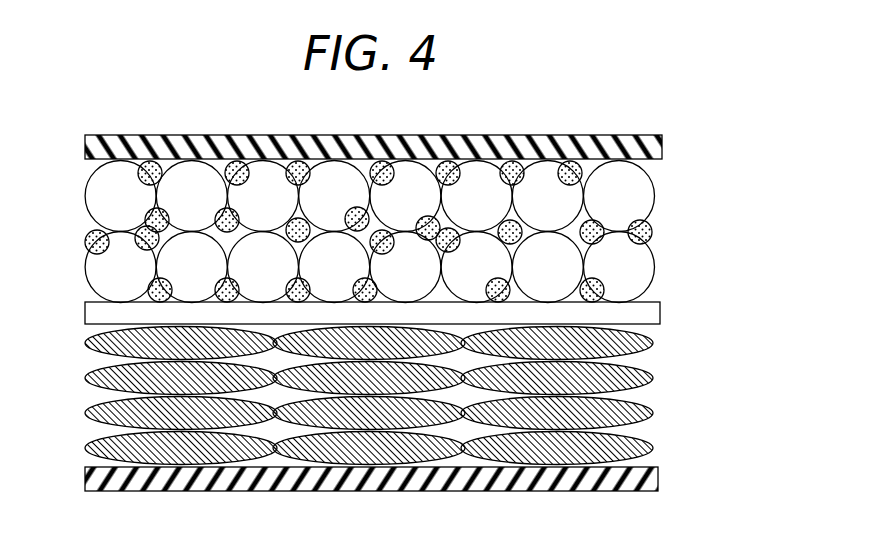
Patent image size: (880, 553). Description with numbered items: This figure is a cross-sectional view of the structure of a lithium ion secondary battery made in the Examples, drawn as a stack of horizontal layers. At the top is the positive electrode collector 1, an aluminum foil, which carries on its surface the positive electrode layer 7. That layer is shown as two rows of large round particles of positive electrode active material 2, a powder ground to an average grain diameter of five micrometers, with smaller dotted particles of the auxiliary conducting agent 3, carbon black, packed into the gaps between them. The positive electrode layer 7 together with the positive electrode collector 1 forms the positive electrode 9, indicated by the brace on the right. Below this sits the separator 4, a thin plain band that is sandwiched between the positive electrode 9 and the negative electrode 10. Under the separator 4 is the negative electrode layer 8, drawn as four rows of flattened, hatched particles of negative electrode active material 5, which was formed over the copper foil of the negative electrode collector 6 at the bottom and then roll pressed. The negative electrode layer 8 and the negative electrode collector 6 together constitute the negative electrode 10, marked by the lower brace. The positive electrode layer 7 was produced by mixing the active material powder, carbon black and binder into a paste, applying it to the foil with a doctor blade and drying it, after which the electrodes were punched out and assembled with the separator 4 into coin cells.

The positive electrode collector 1 is at (85, 147).
The positive electrode active material 2 is at (92, 192).
The auxiliary conducting agent 3 is at (86, 241).
The separator 4 is at (72, 327).
The negative electrode active material 5 is at (92, 375).
The negative electrode collector 6 is at (85, 475).
The positive electrode layer 7 is at (678, 162).
The negative electrode layer 8 is at (679, 326).
The positive electrode 9 is at (737, 125).
The negative electrode 10 is at (737, 326).